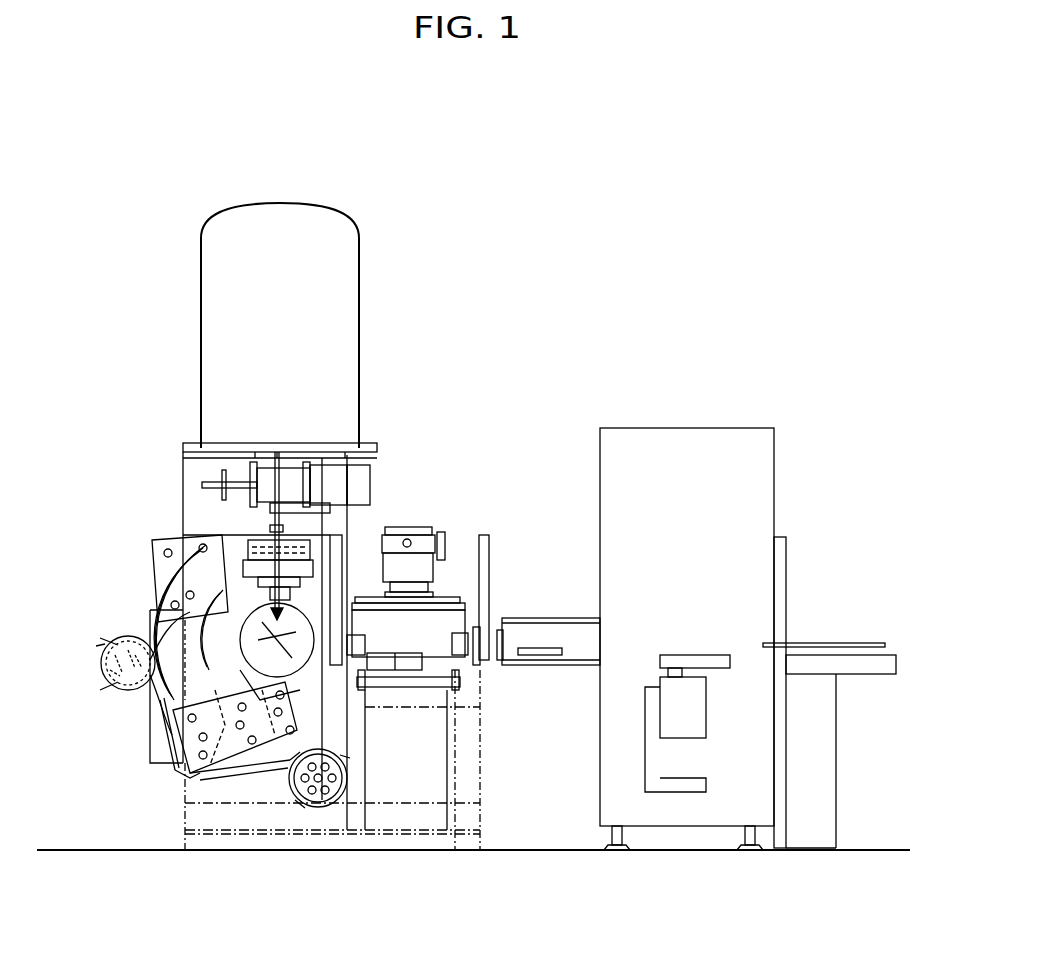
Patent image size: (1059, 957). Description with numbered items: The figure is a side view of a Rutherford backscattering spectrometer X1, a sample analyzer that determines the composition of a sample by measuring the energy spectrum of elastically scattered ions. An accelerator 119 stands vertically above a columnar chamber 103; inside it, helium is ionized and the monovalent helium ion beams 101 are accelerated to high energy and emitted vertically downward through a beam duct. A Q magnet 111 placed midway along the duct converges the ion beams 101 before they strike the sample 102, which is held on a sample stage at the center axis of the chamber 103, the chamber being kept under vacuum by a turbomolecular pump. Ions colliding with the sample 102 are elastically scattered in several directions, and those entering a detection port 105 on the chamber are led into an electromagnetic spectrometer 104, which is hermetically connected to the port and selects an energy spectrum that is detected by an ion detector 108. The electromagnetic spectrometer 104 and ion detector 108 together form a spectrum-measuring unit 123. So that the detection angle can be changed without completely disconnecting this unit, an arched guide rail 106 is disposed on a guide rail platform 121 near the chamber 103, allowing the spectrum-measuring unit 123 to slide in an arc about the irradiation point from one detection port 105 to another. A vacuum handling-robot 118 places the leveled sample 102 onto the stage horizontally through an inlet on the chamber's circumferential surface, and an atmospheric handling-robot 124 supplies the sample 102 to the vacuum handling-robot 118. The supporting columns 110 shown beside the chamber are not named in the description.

The Rutherford backscattering spectrometer X1 is at (363, 196).
The accelerator 119 is at (359, 273).
The ion beams 101 is at (245, 512).
The Q magnet 111 is at (235, 522).
The sample 102 is at (280, 653).
The detection port 105 is at (305, 690).
The guide rail 106 is at (170, 692).
The guide rail platform 121 is at (158, 742).
The electromagnetic spectrometer 104 is at (182, 752).
The spectrum-measuring unit 123 is at (248, 798).
The ion detector 108 is at (336, 808).
The support column 110 is at (372, 512).
The vacuum handling-robot 118 is at (415, 520).
The chamber 103 is at (345, 575).
The atmospheric handling-robot 124 is at (688, 428).